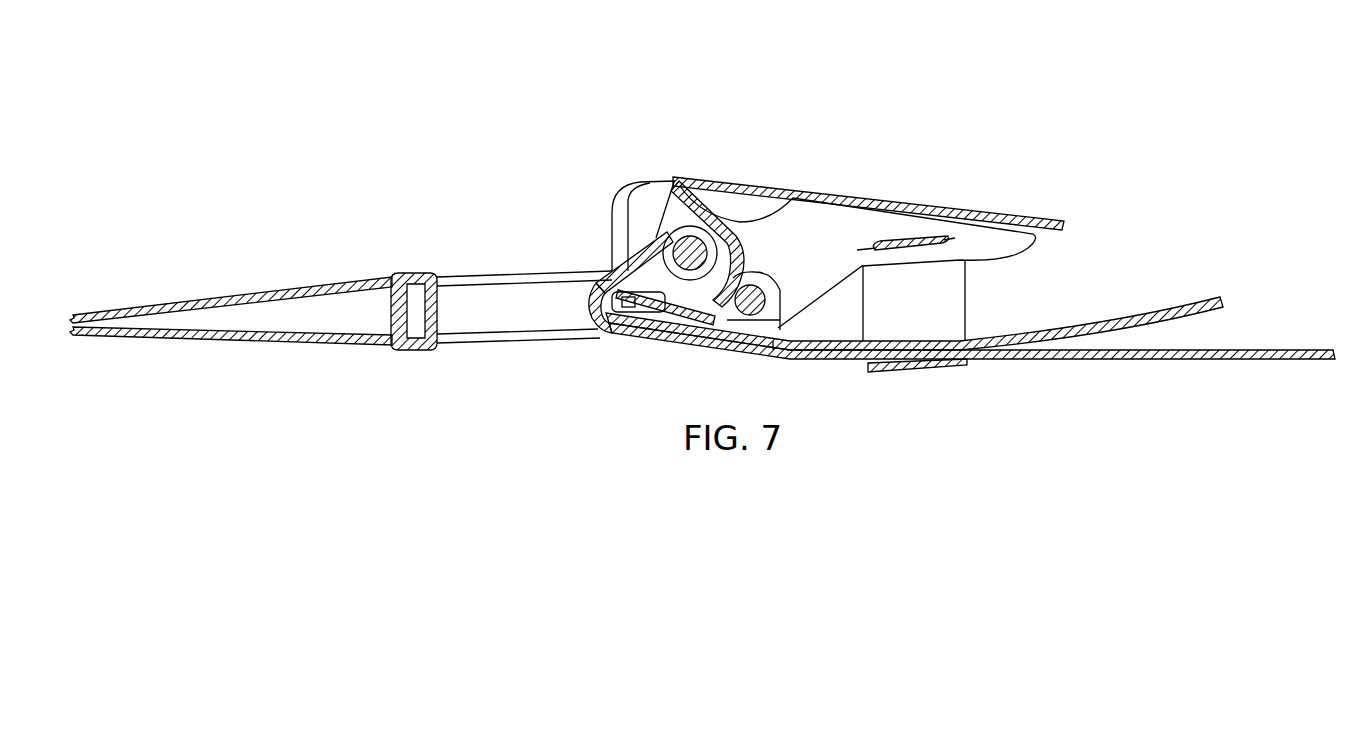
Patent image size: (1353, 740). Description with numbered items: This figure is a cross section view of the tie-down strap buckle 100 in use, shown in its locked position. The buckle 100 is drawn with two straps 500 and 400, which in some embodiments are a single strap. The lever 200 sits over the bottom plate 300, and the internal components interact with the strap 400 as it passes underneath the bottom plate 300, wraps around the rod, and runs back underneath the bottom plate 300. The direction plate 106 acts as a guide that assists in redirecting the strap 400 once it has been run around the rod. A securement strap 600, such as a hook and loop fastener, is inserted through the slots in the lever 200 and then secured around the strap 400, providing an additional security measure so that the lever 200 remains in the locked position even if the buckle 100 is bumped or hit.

The tie-down strap buckle 100 is at (979, 84).
The direction plate 106 is at (692, 194).
The lever 200 is at (975, 210).
The bottom plate 300 is at (777, 273).
The strap 400 is at (1198, 360).
The strap 500 is at (302, 344).
The securement strap 600 is at (953, 301).